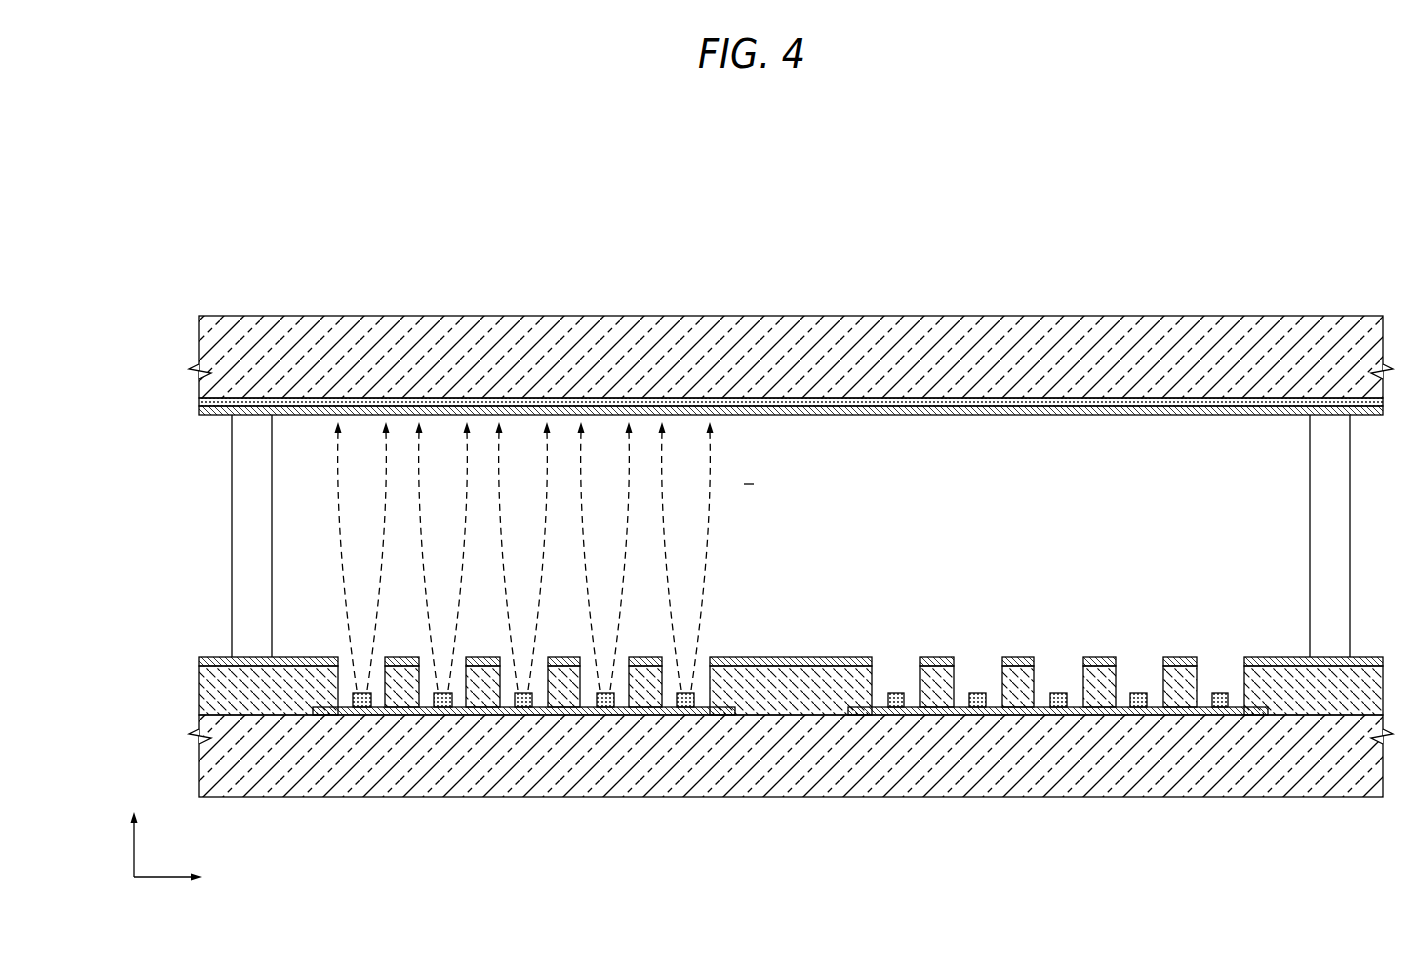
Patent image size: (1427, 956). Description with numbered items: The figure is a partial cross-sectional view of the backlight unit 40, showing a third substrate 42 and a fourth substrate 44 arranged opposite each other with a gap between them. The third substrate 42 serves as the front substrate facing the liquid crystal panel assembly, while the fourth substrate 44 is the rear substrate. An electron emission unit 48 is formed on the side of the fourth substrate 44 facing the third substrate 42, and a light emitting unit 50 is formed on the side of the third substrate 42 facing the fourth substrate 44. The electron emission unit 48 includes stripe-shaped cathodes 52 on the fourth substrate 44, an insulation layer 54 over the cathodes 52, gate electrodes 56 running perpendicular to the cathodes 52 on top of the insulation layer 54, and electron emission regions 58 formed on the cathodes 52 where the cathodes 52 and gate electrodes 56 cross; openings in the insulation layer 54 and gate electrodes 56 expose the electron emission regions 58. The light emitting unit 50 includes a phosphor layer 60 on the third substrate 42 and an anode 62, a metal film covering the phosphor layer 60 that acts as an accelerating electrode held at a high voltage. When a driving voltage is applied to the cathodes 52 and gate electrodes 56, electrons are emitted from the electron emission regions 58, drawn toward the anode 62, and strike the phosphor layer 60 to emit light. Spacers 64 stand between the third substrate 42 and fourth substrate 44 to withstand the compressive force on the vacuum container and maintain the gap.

The backlight unit 40 is at (989, 283).
The third substrate 42 is at (423, 333).
The fourth substrate 44 is at (733, 782).
The electron emission unit 48 is at (820, 640).
The light emitting unit 50 is at (836, 423).
The cathode 52 is at (400, 715).
The insulation layer 54 is at (1370, 692).
The gate electrode 56 is at (1019, 658).
The electron emission region 58 is at (1217, 693).
The phosphor layer 60 is at (614, 398).
The anode 62 is at (1005, 413).
The spacer 64 is at (248, 511).